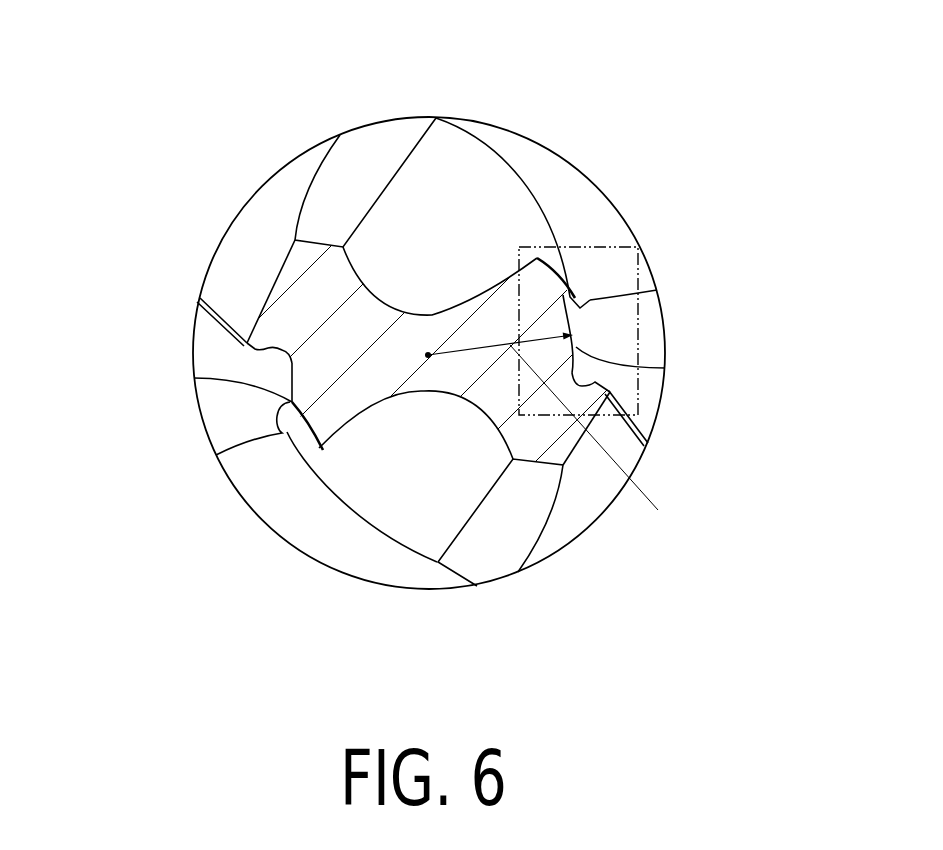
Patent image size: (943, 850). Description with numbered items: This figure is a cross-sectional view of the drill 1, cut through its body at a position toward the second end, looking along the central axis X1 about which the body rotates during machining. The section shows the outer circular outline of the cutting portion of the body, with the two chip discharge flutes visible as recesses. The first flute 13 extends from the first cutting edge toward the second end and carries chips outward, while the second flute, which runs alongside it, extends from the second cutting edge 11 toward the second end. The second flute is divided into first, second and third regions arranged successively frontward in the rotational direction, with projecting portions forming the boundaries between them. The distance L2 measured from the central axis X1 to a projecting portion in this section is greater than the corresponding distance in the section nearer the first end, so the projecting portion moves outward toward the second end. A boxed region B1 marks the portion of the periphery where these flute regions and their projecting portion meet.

The drill 1 is at (313, 100).
The second cutting edge 11 is at (235, 338).
The first flute 13 is at (452, 203).
The region B1 is at (638, 268).
The distance L2 is at (597, 440).
The central axis X1 is at (432, 360).